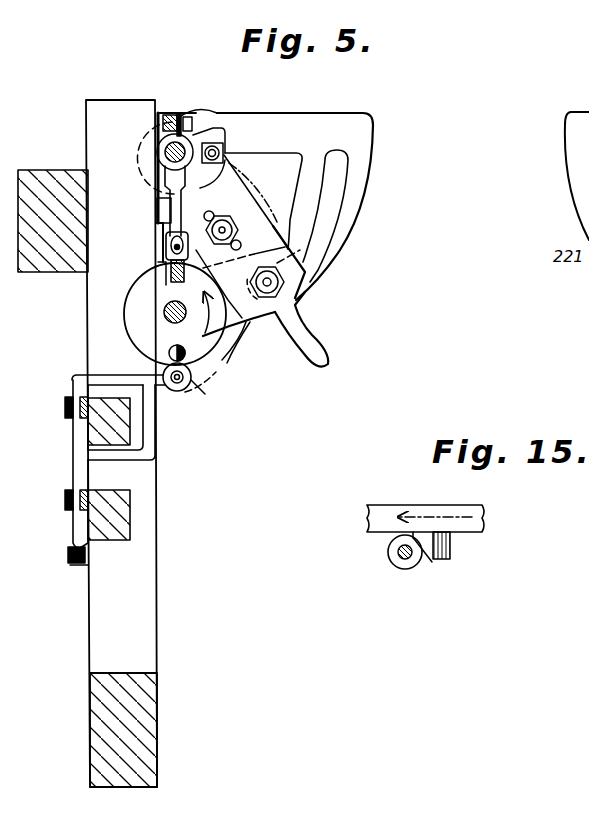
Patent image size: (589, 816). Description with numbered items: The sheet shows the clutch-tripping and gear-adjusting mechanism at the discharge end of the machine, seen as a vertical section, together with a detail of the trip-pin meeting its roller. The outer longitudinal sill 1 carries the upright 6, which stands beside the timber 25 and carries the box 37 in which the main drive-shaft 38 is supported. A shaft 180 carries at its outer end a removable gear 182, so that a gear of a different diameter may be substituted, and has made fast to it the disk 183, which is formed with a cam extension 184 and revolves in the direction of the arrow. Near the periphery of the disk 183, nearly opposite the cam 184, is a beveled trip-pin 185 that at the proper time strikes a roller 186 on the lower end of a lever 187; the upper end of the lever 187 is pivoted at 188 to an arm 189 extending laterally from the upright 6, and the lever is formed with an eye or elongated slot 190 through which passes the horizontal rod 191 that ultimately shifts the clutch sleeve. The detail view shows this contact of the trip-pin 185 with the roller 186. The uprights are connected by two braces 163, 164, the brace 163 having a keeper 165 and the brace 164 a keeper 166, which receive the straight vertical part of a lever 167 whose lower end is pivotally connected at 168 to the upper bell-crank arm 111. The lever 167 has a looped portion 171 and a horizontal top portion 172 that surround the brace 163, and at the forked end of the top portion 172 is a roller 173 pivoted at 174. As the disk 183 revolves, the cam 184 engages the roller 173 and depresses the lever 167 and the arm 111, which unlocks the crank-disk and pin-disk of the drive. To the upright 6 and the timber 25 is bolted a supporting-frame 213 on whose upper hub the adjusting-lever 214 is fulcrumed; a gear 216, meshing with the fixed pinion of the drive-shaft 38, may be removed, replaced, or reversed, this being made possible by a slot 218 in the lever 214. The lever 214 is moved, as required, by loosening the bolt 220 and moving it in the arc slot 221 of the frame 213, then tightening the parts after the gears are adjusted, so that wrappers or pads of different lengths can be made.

In FIG. 5, the outer longitudinal sill 1 is at (158, 708).
In FIG. 5, the upright 6 is at (150, 608).
In FIG. 5, the timber 25 is at (30, 273).
In FIG. 5, the box 37 is at (199, 130).
In FIG. 5, the main drive-shaft 38 is at (141, 142).
In FIG. 5, the upper bell-crank arm 111 is at (72, 565).
In FIG. 5, the brace 163 is at (109, 421).
In FIG. 5, the brace 164 is at (109, 515).
In FIG. 5, the keeper 165 is at (64, 414).
In FIG. 5, the keeper 166 is at (67, 504).
In FIG. 5, the lever 167 is at (72, 473).
In FIG. 5, the pivotal connection 168 is at (66, 554).
In FIG. 5, the looped portion 171 is at (144, 432).
In FIG. 5, the horizontal top portion 172 is at (117, 377).
In FIG. 5, the roller 173 is at (190, 390).
In FIG. 5, the pivot 174 is at (175, 389).
In FIG. 5, the shaft 180 is at (168, 327).
In FIG. 5, the gear 182 is at (218, 374).
In FIG. 5, the disk 183 is at (130, 319).
In FIG. 15, the disk 183 is at (480, 506).
In FIG. 5, the cam extension 184 is at (219, 279).
In FIG. 5, the beveled trip-pin 185 is at (183, 348).
In FIG. 15, the beveled trip-pin 185 is at (424, 546).
In FIG. 5, the roller 186 is at (170, 270).
In FIG. 15, the roller 186 is at (405, 570).
In FIG. 5, the lever 187 is at (162, 168).
In FIG. 5, the pivot 188 is at (187, 116).
In FIG. 5, the arm 189 is at (168, 114).
In FIG. 5, the elongated slot 190 is at (182, 241).
In FIG. 5, the horizontal rod 191 is at (166, 244).
In FIG. 5, the supporting-frame 213 is at (220, 128).
In FIG. 5, the adjusting-lever 214 is at (250, 236).
In FIG. 5, the gear 216 is at (259, 183).
In FIG. 5, the slot 218 is at (210, 219).
In FIG. 5, the bolt 220 is at (280, 284).
In FIG. 5, the arc slot 221 is at (335, 230).